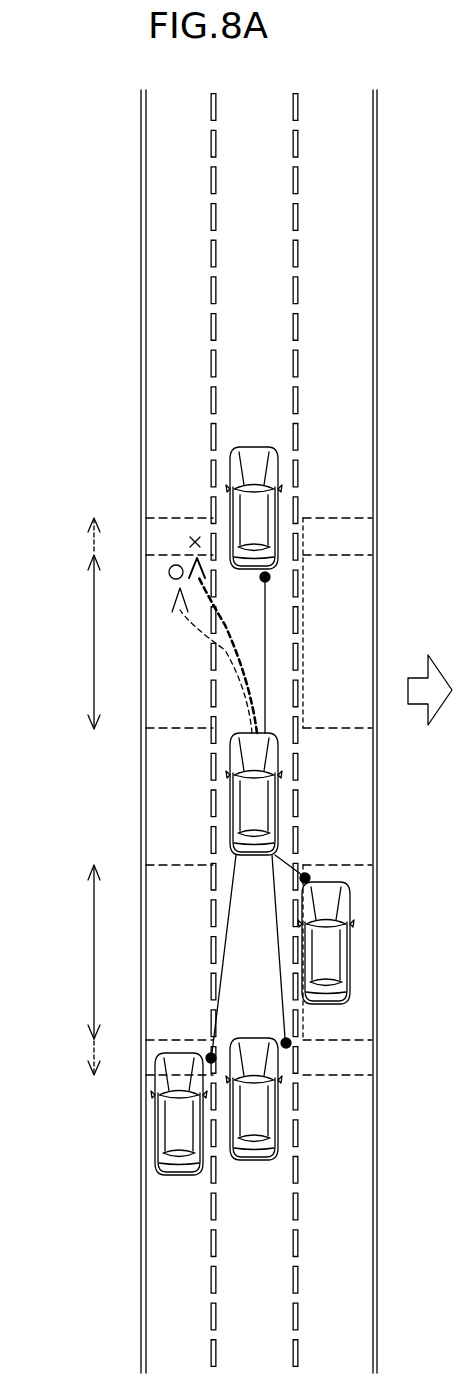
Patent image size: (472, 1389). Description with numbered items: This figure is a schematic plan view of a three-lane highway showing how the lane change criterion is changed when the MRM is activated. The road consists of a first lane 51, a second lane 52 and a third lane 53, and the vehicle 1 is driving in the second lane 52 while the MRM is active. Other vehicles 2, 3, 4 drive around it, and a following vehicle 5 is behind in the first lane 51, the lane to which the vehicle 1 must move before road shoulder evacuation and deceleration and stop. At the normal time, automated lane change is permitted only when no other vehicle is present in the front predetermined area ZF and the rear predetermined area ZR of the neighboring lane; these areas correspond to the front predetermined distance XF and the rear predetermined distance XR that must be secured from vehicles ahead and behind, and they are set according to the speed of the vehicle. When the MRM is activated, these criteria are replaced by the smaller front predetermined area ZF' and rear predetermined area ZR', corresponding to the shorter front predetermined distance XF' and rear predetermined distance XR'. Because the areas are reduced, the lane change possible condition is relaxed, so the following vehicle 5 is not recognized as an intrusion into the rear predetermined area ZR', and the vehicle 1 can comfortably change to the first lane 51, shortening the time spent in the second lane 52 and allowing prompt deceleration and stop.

The vehicle 1 is at (279, 793).
The preceding vehicle 2 is at (279, 474).
The adjacent vehicle in right lane 3 is at (349, 938).
The following vehicle 4 is at (250, 1160).
The following vehicle 5 is at (155, 1135).
The first lane 51 is at (197, 131).
The second lane 52 is at (275, 131).
The third lane 53 is at (350, 131).
The front predetermined area ZF is at (262, 486).
The front predetermined area at MRM activation ZF' is at (252, 647).
The rear predetermined area ZR is at (249, 1083).
The rear predetermined area at MRM activation ZR' is at (249, 929).
The front predetermined distance XF is at (68, 535).
The front predetermined distance at MRM activation XF' is at (68, 642).
The rear predetermined distance XR is at (68, 1055).
The rear predetermined distance at MRM activation XR' is at (68, 952).
The element MRM is at (232, 800).